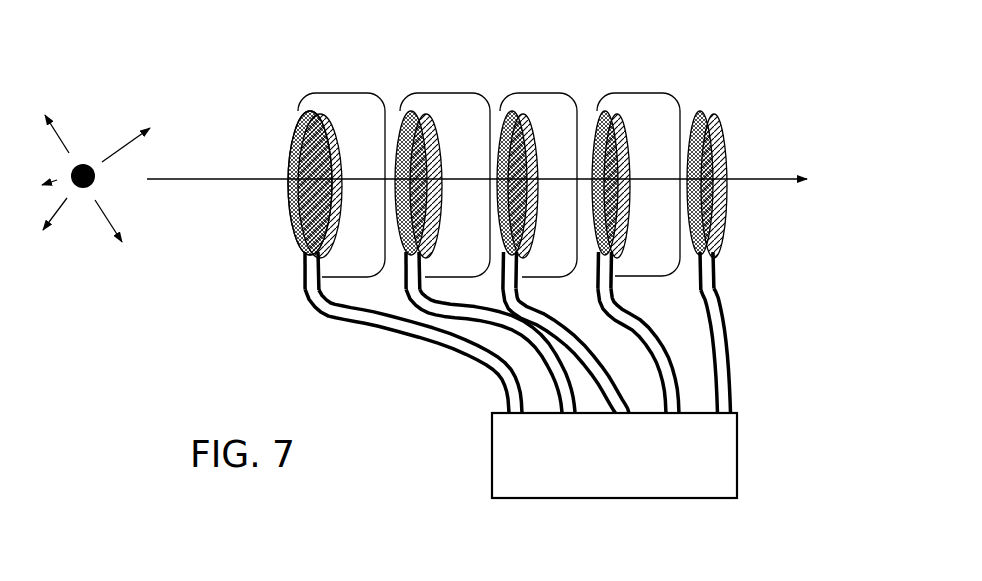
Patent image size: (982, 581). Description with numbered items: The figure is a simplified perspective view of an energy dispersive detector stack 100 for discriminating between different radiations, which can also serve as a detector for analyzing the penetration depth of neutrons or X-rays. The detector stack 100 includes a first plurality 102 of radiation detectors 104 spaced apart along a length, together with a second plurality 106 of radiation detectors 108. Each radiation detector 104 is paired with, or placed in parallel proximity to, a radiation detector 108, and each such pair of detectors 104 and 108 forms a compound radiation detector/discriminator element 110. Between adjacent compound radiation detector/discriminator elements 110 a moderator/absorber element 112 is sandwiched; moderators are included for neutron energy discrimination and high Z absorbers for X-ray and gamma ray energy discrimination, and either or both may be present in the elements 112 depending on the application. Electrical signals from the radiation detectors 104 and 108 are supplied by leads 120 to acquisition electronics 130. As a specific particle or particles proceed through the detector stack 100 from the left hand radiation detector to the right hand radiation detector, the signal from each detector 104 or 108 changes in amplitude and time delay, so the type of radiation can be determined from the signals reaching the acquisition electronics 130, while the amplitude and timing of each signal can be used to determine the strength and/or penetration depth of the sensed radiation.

The energy dispersive detector stack 100 is at (844, 122).
The first plurality of radiation detectors 102 is at (697, 120).
The radiation detector 104 is at (297, 229).
The second plurality of radiation detectors 106 is at (338, 178).
The radiation detector 108 is at (723, 178).
The compound radiation detector/discriminator element 110 is at (293, 258).
The moderator/absorber element 112 is at (458, 110).
The leads 120 is at (543, 362).
The acquisition electronics 130 is at (737, 470).